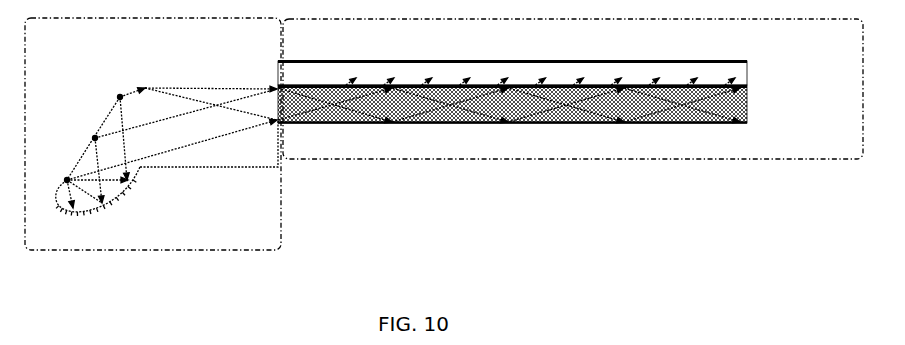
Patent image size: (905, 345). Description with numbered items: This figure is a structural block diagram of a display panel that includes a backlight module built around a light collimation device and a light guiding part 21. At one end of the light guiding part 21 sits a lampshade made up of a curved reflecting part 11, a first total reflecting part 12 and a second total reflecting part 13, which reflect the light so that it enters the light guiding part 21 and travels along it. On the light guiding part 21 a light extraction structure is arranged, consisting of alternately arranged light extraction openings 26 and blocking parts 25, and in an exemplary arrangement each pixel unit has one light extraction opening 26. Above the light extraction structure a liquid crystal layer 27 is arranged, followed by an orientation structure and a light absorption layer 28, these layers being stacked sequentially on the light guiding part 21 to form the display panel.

The curved reflecting part 11 is at (122, 192).
The first total reflecting part 12 is at (107, 115).
The second total reflecting part 13 is at (222, 87).
The light guiding part 21 is at (337, 107).
The blocking parts 25 is at (747, 87).
The light extraction openings 26 is at (745, 105).
The liquid crystal layer 27 is at (741, 70).
The light absorption layer 28 is at (747, 61).